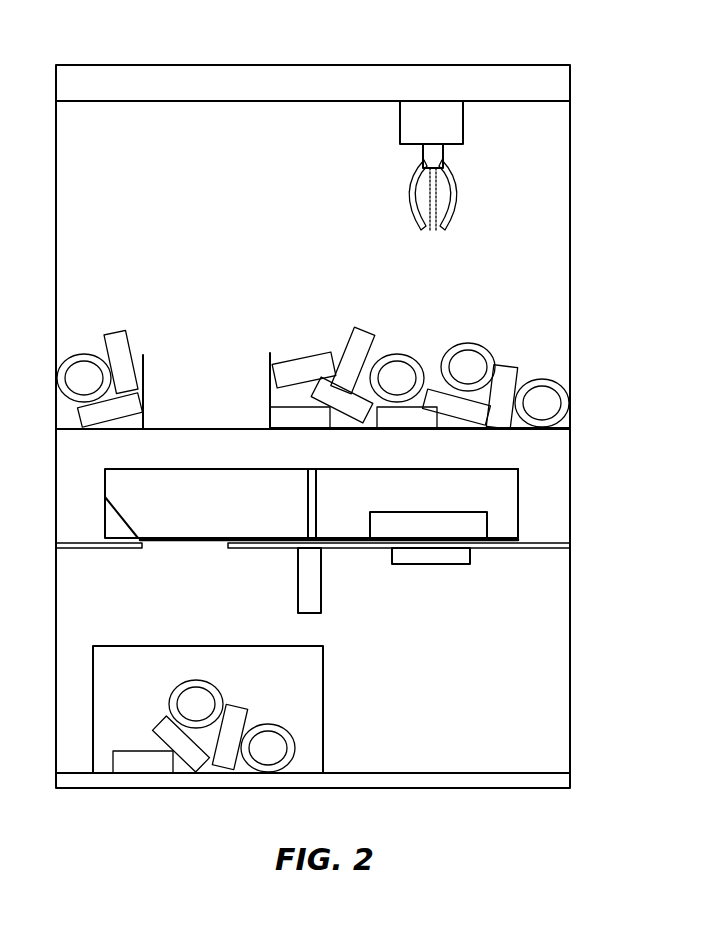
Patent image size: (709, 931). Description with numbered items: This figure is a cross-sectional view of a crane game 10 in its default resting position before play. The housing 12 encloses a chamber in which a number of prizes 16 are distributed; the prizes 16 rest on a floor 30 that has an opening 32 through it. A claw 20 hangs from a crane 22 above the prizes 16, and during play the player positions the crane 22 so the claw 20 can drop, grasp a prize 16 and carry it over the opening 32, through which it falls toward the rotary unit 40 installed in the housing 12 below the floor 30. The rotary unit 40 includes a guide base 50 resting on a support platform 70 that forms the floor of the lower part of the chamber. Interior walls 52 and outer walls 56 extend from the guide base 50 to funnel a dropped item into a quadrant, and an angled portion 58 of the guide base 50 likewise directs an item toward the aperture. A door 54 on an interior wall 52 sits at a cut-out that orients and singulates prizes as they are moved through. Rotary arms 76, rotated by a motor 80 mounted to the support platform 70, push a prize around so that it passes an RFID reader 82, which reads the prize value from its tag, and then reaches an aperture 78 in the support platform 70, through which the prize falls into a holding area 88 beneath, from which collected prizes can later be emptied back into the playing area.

The crane game 10 is at (157, 42).
The housing 12 is at (570, 438).
The prizes 16 is at (472, 345).
The claw 20 is at (407, 184).
The crane 22 is at (408, 131).
The floor 30 is at (438, 152).
The opening 32 is at (145, 375).
The rotary unit 40 is at (546, 500).
The guide base 50 is at (283, 469).
The interior walls 52 is at (318, 490).
The door 54 is at (478, 528).
The outer walls 56 is at (520, 480).
The angled portion 58 is at (107, 499).
The support platform 70 is at (278, 548).
The rotary arms 76 is at (270, 538).
The aperture 78 is at (228, 546).
The motor 80 is at (322, 588).
The RFID reader 82 is at (448, 566).
The holding area 88 is at (318, 702).